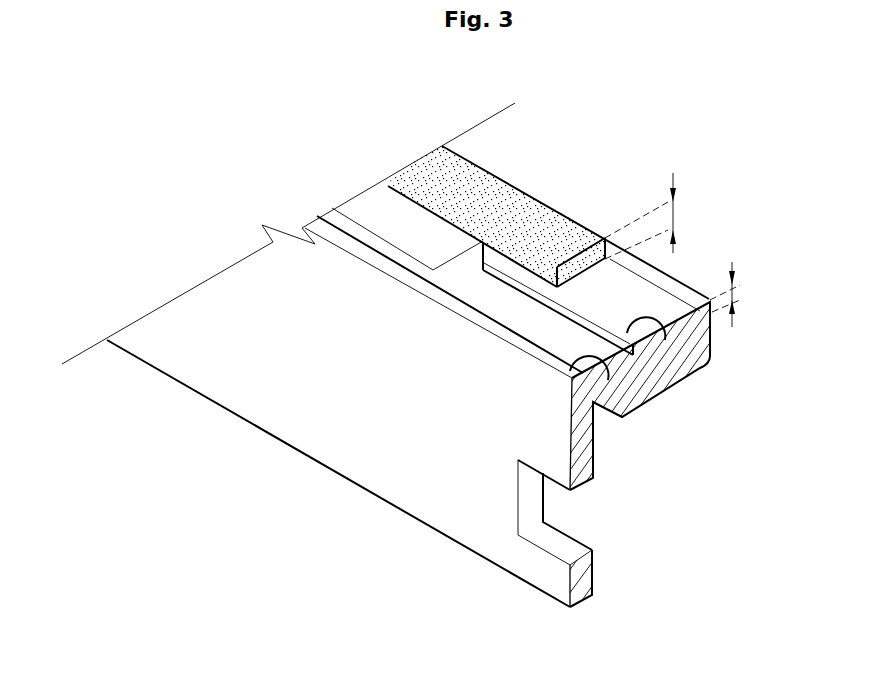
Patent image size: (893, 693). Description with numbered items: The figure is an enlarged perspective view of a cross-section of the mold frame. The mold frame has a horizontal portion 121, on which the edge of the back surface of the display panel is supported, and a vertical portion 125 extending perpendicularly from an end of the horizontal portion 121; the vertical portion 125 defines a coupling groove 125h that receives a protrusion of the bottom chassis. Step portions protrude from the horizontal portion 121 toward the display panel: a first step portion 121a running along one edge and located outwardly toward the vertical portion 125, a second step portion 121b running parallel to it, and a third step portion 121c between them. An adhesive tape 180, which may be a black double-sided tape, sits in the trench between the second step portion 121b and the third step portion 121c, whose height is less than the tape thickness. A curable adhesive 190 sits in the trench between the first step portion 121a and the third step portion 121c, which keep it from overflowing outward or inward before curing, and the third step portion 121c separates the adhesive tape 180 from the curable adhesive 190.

The horizontal portion 121 is at (697, 357).
The first step portion 121a is at (608, 380).
The second step portion 121b is at (683, 282).
The third step portion 121c is at (665, 340).
The vertical portion 125 is at (385, 443).
The coupling groove 125h is at (582, 520).
The adhesive tape 180 is at (533, 217).
The curable adhesive 190 is at (370, 205).